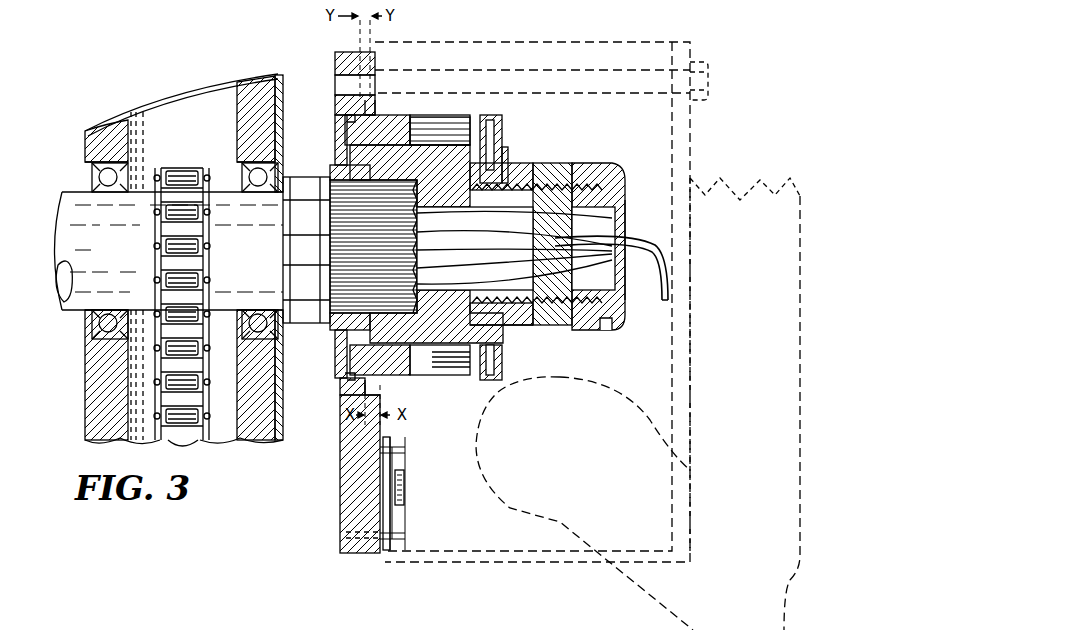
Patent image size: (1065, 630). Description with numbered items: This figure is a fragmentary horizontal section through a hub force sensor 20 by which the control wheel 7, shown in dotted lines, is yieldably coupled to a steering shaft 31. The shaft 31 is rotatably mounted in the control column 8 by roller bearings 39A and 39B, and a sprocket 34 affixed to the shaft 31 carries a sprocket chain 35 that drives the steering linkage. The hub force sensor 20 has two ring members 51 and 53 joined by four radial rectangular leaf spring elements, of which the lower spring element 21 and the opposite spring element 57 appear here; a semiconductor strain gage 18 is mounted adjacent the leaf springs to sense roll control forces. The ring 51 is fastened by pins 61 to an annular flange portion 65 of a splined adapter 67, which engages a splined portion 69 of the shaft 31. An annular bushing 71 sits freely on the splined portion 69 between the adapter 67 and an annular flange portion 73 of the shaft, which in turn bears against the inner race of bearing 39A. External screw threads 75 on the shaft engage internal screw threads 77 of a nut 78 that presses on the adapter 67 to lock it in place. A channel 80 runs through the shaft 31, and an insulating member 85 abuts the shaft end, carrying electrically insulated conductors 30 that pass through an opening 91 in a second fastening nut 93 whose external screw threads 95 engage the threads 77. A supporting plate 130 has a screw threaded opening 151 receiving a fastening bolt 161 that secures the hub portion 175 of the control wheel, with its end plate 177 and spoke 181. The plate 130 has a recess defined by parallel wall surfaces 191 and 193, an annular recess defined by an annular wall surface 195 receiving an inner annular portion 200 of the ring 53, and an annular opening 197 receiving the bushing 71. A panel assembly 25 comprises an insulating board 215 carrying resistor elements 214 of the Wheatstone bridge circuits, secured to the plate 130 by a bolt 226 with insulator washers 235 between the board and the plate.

The control wheel 7 is at (802, 362).
The control column 8 is at (172, 86).
The semiconductor strain gage 18 is at (450, 378).
The hub force sensor 20 is at (506, 253).
The radial rectangular leaf spring element 21 is at (462, 378).
The panel assembly 25 is at (410, 500).
The electrically insulated conductors 30 is at (630, 233).
The steering shaft 31 is at (68, 200).
The sprocket 34 is at (183, 168).
The sprocket chain 35 is at (208, 356).
The roller bearing 39A is at (258, 315).
The roller bearing 39B is at (132, 185).
The ring member 51 is at (494, 118).
The ring member 53 is at (404, 118).
The radial rectangular leaf spring element 57 is at (476, 130).
The pin 61 is at (496, 133).
The annular flange portion 65 is at (508, 152).
The splined adapter 67 is at (422, 169).
The splined portion 69 is at (328, 258).
The annular bushing 71 is at (330, 166).
The annular flange portion 73 is at (330, 328).
The external screw threads 75 is at (520, 325).
The internal screw threads 77 is at (525, 172).
The nut 78 is at (575, 165).
The channel 80 is at (525, 190).
The insulating member 85 is at (586, 320).
The opening 91 is at (618, 284).
The second fastening nut 93 is at (628, 300).
The external screw threads 95 is at (618, 254).
The supporting plate 130 is at (357, 289).
The screw threaded opening 151 is at (334, 62).
The fastening bolt 161 is at (708, 80).
The hub portion 175 is at (575, 40).
The end plate 177 is at (697, 140).
The spoke 181 is at (635, 566).
The wall surface 191 is at (376, 106).
The wall surface 193 is at (378, 393).
The annular wall surface 195 is at (336, 102).
The annular opening 197 is at (340, 146).
The inner annular portion 200 is at (350, 119).
The resistor element 214 is at (405, 488).
The insulating board 215 is at (393, 440).
The bolt 226 is at (340, 538).
The insulator washer 235 is at (396, 460).